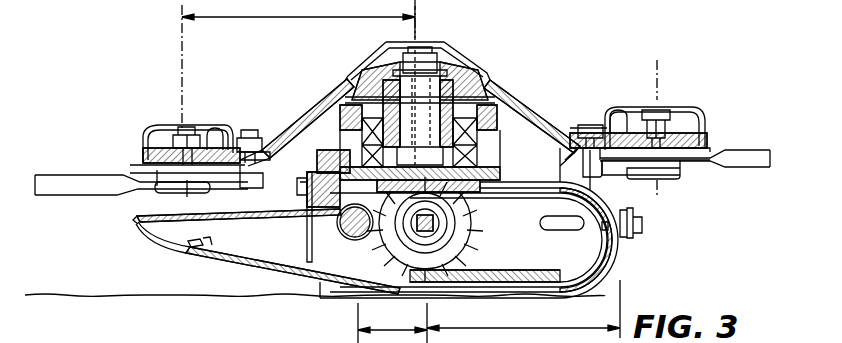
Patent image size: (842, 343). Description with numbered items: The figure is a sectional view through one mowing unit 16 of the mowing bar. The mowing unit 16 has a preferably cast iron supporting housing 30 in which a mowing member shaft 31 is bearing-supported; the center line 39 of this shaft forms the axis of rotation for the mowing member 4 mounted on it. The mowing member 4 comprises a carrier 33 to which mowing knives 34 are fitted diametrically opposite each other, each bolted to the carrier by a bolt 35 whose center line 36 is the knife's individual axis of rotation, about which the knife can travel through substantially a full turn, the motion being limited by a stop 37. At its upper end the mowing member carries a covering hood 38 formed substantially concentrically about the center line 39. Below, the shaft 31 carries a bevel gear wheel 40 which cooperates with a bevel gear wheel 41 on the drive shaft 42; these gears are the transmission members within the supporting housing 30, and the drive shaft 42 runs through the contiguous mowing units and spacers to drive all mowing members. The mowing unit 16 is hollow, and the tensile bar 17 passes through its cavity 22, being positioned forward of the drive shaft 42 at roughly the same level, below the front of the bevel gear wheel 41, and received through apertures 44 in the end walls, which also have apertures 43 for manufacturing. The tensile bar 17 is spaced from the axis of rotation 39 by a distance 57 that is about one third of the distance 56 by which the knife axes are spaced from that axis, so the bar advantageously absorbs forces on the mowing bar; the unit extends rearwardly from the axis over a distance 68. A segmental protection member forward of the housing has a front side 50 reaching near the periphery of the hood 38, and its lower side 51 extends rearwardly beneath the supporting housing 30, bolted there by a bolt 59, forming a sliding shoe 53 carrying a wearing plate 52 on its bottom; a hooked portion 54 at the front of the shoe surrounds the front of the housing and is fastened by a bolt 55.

The mowing member 4 is at (318, 69).
The mowing unit 16 is at (566, 213).
The tensile bar 17 is at (308, 260).
The cavity 22 is at (604, 244).
The supporting housing 30 is at (342, 262).
The mowing member shaft 31 is at (456, 100).
The carrier 33 is at (525, 100).
The mowing knife 34 is at (62, 202).
The bolt 35 is at (688, 118).
The center line 36 is at (180, 116).
The stop 37 is at (243, 188).
The covering hood 38 is at (298, 118).
The center line 39 is at (417, 28).
The bevel gear wheel 40 is at (487, 197).
The bevel gear wheel 41 is at (458, 233).
The drive shaft 42 is at (455, 255).
The aperture 43 is at (553, 243).
The aperture 44 is at (305, 245).
The front side 50 is at (126, 232).
The lower side 51 is at (212, 270).
The wearing plate 52 is at (262, 280).
The sliding shoe 53 is at (148, 271).
The hooked portion 54 is at (278, 140).
The bolt 55 is at (296, 193).
The distance 56 is at (241, 25).
The distance 57 is at (399, 315).
The bolt 59 is at (648, 230).
The distance 68 is at (516, 327).